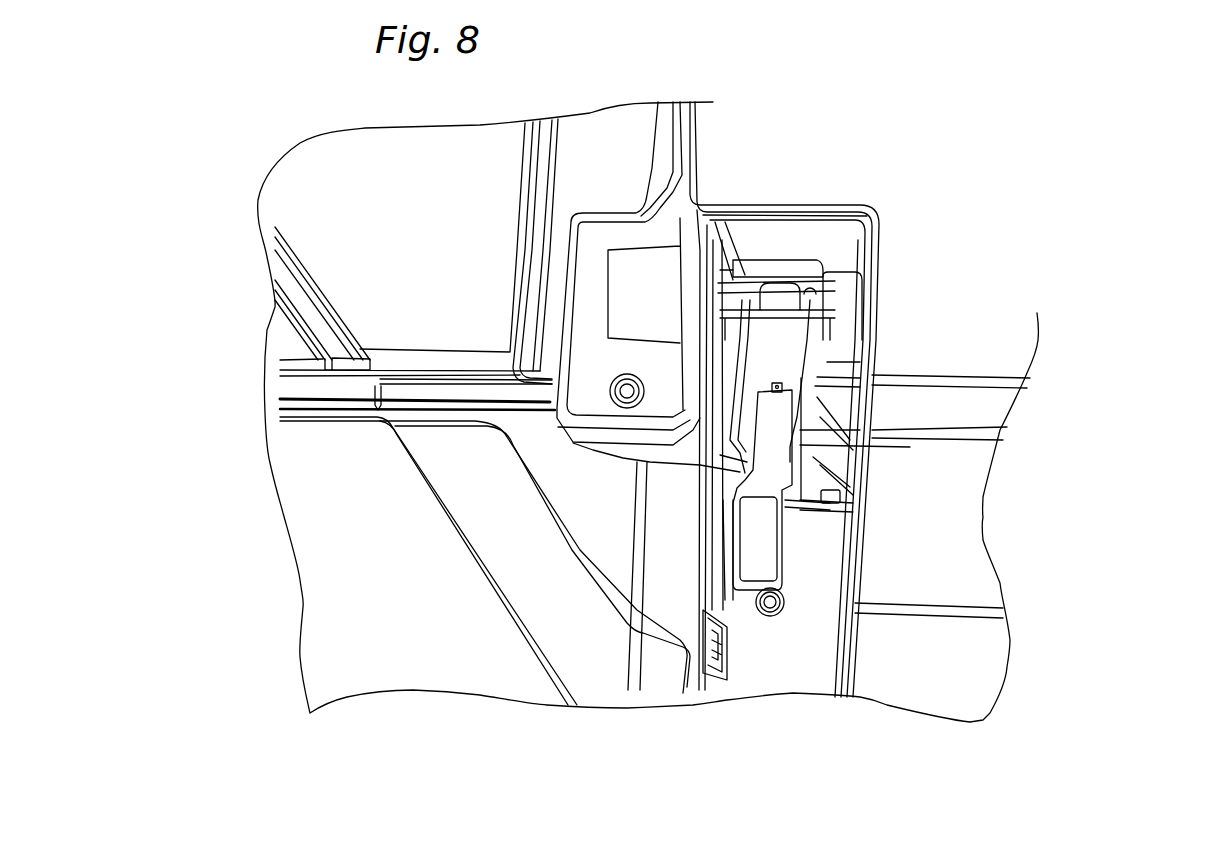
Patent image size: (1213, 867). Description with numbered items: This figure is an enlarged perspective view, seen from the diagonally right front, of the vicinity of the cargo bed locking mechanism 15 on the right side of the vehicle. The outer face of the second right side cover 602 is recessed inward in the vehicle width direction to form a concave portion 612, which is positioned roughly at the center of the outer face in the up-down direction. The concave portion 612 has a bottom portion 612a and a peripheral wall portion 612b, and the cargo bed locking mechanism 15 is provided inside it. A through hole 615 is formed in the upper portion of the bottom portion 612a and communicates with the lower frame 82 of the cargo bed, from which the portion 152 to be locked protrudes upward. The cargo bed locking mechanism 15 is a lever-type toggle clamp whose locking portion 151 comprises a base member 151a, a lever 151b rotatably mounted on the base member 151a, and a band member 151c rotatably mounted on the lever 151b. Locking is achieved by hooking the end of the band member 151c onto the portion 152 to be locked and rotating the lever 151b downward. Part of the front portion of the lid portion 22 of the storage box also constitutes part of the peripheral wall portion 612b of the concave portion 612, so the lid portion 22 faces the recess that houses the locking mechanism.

The lower frame 82 is at (770, 356).
The cargo bed locking mechanism 15 is at (750, 283).
The portion to be locked 152 is at (776, 300).
The through hole 615 is at (820, 307).
The band member 151c is at (787, 382).
The base member 151a is at (800, 424).
The lever 151b is at (765, 555).
The locking portion 151 is at (1142, 377).
The lid portion 22 is at (590, 650).
The peripheral wall portion 612b is at (727, 603).
The bottom portion 612a is at (798, 662).
The concave portion 612 is at (857, 798).
The second right side cover 602 is at (905, 672).